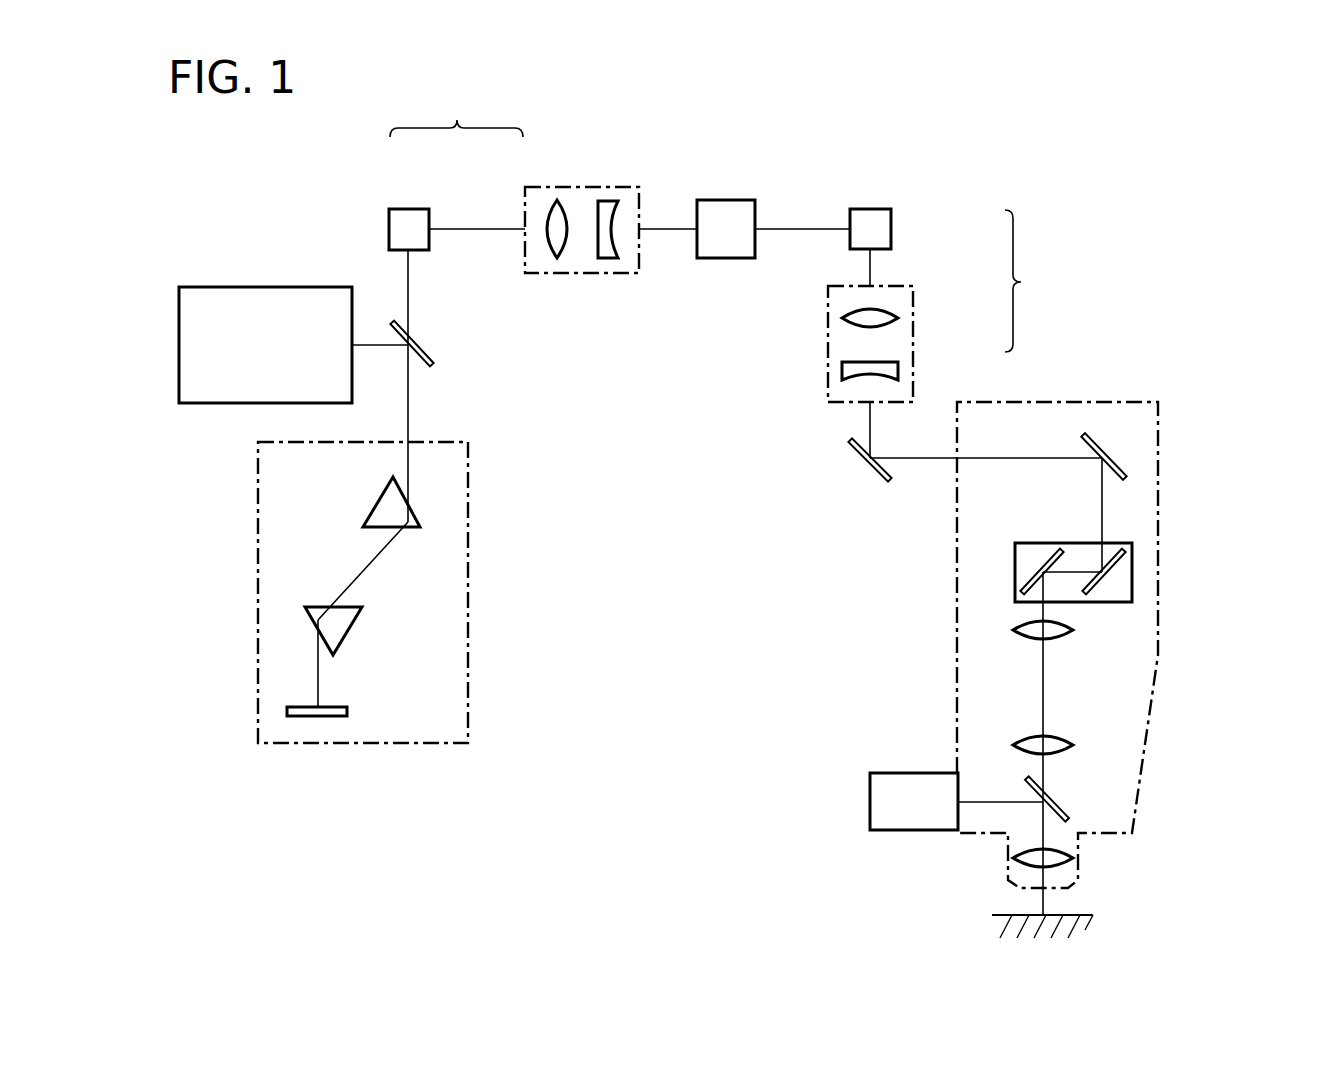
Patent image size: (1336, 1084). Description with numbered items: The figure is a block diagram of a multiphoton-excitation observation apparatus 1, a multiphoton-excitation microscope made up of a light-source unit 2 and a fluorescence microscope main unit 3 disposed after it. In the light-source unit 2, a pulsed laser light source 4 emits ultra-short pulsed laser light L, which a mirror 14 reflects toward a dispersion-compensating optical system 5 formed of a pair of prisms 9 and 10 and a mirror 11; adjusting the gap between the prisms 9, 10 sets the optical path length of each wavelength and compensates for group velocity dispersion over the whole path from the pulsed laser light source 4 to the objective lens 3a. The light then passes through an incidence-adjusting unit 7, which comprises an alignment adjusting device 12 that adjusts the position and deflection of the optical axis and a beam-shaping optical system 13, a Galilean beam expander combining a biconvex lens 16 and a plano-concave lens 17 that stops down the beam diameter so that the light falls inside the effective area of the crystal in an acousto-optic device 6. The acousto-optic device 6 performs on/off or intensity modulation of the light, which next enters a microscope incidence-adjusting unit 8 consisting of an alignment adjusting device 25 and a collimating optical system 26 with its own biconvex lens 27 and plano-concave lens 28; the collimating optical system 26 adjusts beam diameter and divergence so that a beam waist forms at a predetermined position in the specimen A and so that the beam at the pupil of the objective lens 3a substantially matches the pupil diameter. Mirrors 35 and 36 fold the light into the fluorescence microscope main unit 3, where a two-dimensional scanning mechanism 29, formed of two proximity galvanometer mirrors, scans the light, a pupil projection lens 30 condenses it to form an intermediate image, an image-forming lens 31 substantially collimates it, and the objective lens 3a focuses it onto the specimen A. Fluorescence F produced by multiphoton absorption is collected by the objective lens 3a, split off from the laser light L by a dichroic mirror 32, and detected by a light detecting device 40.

The multiphoton-excitation observation apparatus 1 is at (1135, 192).
The light-source unit 2 is at (655, 457).
The fluorescence microscope main unit 3 is at (1105, 372).
The objective lens 3a is at (1073, 858).
The pulsed laser light source 4 is at (282, 287).
The dispersion-compensating optical system 5 is at (468, 610).
The acousto-optic device 6 is at (721, 200).
The incidence-adjusting unit 7 is at (456, 108).
The microscope incidence-adjusting unit 8 is at (1024, 281).
The prism 9 is at (420, 510).
The prism 10 is at (353, 630).
The mirror 11 is at (347, 712).
The alignment adjusting device 12 is at (407, 209).
The beam-shaping optical system 13 is at (525, 210).
The mirror 14 is at (432, 350).
The biconvex lens 16 is at (557, 258).
The plano-concave lens 17 is at (613, 258).
The alignment adjusting device 25 is at (892, 228).
The collimating optical system 26 is at (913, 330).
The biconvex lens 27 is at (842, 318).
The plano-concave lens 28 is at (842, 370).
The two-dimensional scanning mechanism 29 is at (1132, 575).
The pupil projection lens 30 is at (1073, 630).
The image-forming lens 31 is at (1058, 735).
The dichroic mirror 32 is at (1060, 798).
The mirror 35 is at (858, 462).
The mirror 36 is at (1125, 462).
The light detecting device 40 is at (907, 773).
The specimen A is at (1082, 915).
The fluorescence F is at (1008, 802).
The ultra-short pulsed laser light L is at (408, 295).